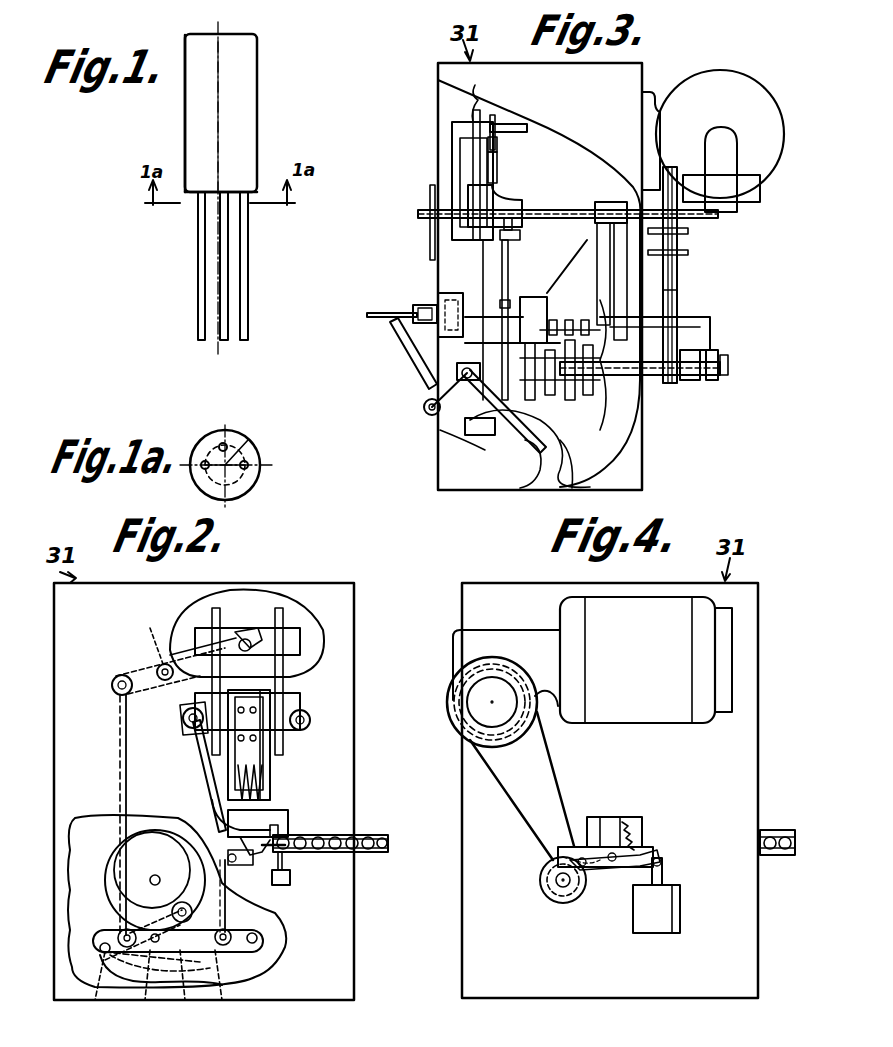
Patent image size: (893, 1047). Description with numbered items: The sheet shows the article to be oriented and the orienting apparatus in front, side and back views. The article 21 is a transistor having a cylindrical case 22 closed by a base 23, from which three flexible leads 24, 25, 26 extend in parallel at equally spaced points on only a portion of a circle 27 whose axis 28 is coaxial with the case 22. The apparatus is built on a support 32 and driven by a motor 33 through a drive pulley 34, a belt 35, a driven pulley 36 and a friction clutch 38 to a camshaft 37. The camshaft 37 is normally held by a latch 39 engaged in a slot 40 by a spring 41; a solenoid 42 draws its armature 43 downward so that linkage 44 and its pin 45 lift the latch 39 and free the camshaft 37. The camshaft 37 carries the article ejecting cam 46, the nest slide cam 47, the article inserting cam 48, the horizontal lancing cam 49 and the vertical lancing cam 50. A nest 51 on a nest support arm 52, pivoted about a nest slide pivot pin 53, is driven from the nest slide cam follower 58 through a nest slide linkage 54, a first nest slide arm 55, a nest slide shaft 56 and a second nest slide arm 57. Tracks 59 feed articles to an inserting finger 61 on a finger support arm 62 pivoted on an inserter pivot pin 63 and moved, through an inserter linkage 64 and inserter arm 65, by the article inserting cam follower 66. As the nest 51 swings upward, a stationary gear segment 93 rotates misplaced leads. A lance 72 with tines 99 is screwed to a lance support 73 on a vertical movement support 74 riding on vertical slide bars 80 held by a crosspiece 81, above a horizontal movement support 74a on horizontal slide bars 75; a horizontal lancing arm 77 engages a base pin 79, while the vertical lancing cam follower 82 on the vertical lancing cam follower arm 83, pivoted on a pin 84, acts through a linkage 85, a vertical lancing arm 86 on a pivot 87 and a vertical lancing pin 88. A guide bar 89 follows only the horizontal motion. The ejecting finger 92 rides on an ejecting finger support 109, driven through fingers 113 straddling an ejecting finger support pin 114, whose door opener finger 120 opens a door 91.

In FIG. 1, the article 21 is at (280, 26).
In FIG. 2, the article 21 is at (330, 838).
In FIG. 4, the article 21 is at (781, 834).
In FIG. 1, the case 22 is at (248, 84).
In FIG. 1, the base 23 is at (258, 190).
In FIG. 1a, the base 23 is at (212, 478).
In FIG. 1, the lead 24 is at (248, 298).
In FIG. 1a, the lead 24 is at (250, 464).
In FIG. 1, the lead 25 is at (224, 298).
In FIG. 1a, the lead 25 is at (226, 444).
In FIG. 1, the lead 26 is at (198, 264).
In FIG. 1a, the lead 26 is at (204, 460).
In FIG. 1a, the circle 27 is at (256, 478).
In FIG. 1, the axis 28 is at (218, 112).
In FIG. 1a, the axis 28 is at (238, 452).
In FIG. 3, the support 32 is at (438, 118).
In FIG. 2, the support 32 is at (355, 617).
In FIG. 4, the support 32 is at (462, 958).
In FIG. 3, the motor 33 is at (752, 85).
In FIG. 4, the motor 33 is at (690, 725).
In FIG. 3, the drive pulley 34 is at (665, 165).
In FIG. 4, the drive pulley 34 is at (475, 710).
In FIG. 3, the belt 35 is at (677, 292).
In FIG. 4, the belt 35 is at (510, 828).
In FIG. 3, the driven pulley 36 is at (688, 382).
In FIG. 4, the driven pulley 36 is at (550, 896).
In FIG. 3, the camshaft 37 is at (672, 385).
In FIG. 2, the camshaft 37 is at (160, 878).
In FIG. 4, the camshaft 37 is at (560, 888).
In FIG. 3, the friction clutch 38 is at (712, 382).
In FIG. 4, the latch 39 is at (580, 822).
In FIG. 4, the slot 40 is at (550, 847).
In FIG. 4, the spring 41 is at (640, 835).
In FIG. 4, the solenoid 42 is at (668, 935).
In FIG. 4, the armature 43 is at (663, 868).
In FIG. 4, the linkage 44 is at (622, 890).
In FIG. 4, the pin 45 is at (610, 880).
In FIG. 3, the article ejecting cam 46 is at (616, 374).
In FIG. 3, the nest slide cam 47 is at (600, 440).
In FIG. 2, the nest slide cam 47 is at (108, 850).
In FIG. 3, the article inserting cam 48 is at (580, 336).
In FIG. 3, the horizontal lancing cam 49 is at (580, 386).
In FIG. 3, the vertical lancing cam 50 is at (455, 425).
In FIG. 2, the vertical lancing cam 50 is at (115, 895).
In FIG. 3, the nest 51 is at (450, 292).
In FIG. 2, the nest 51 is at (285, 840).
In FIG. 2, the nest support arm 52 is at (292, 887).
In FIG. 2, the nest slide pivot pin 53 is at (241, 891).
In FIG. 2, the nest slide linkage 54 is at (262, 940).
In FIG. 2, the first nest slide arm 55 is at (232, 991).
In FIG. 2, the nest slide shaft 56 is at (87, 991).
In FIG. 2, the second nest slide arm 57 is at (110, 932).
In FIG. 2, the nest slide cam follower 58 is at (179, 965).
In FIG. 3, the tracks 59 is at (418, 300).
In FIG. 2, the tracks 59 is at (382, 835).
In FIG. 4, the tracks 59 is at (760, 862).
In FIG. 3, the inserting finger 61 is at (367, 325).
In FIG. 2, the inserting finger 61 is at (290, 858).
In FIG. 3, the finger support arm 62 is at (398, 385).
In FIG. 2, the finger support arm 62 is at (295, 875).
In FIG. 3, the inserter pivot pin 63 is at (424, 414).
In FIG. 3, the inserter linkage 64 is at (525, 450).
In FIG. 3, the inserter arm 65 is at (525, 490).
In FIG. 3, the article inserting cam follower 66 is at (572, 490).
In FIG. 3, the lance 72 is at (452, 236).
In FIG. 2, the lance 72 is at (270, 770).
In FIG. 3, the lance support 73 is at (430, 188).
In FIG. 2, the lance support 73 is at (280, 738).
In FIG. 3, the vertical movement support 74 is at (466, 91).
In FIG. 2, the vertical movement support 74 is at (300, 697).
In FIG. 3, the horizontal movement support 74a is at (518, 205).
In FIG. 3, the horizontal slide bars 75 is at (418, 212).
In FIG. 2, the horizontal slide bars 75 is at (310, 716).
In FIG. 3, the horizontal lancing arm 77 is at (520, 235).
In FIG. 3, the base pin 79 is at (530, 252).
In FIG. 3, the vertical slide bars 80 is at (480, 105).
In FIG. 2, the vertical slide bars 80 is at (212, 612).
In FIG. 2, the crosspiece 81 is at (300, 640).
In FIG. 3, the vertical lancing cam follower 82 is at (475, 435).
In FIG. 2, the vertical lancing cam follower 82 is at (156, 990).
In FIG. 3, the vertical lancing cam follower arm 83 is at (485, 455).
In FIG. 2, the vertical lancing cam follower arm 83 is at (199, 990).
In FIG. 2, the pin 84 is at (245, 983).
In FIG. 3, the linkage 85 is at (496, 175).
In FIG. 2, the linkage 85 is at (120, 787).
In FIG. 3, the vertical lancing arm 86 is at (500, 145).
In FIG. 2, the vertical lancing arm 86 is at (118, 672).
In FIG. 2, the pivot 87 is at (146, 632).
In FIG. 3, the vertical lancing pin 88 is at (525, 125).
In FIG. 2, the vertical lancing pin 88 is at (255, 630).
In FIG. 2, the guide bar 89 is at (200, 770).
In FIG. 2, the door 91 is at (225, 814).
In FIG. 3, the ejecting finger 92 is at (512, 300).
In FIG. 2, the gear segment 93 is at (285, 812).
In FIG. 3, the tines 99 is at (530, 312).
In FIG. 3, the ejecting finger support 109 is at (685, 305).
In FIG. 3, the fingers 113 is at (680, 231).
In FIG. 3, the ejecting finger support pin 114 is at (680, 252).
In FIG. 3, the door opener finger 120 is at (465, 340).